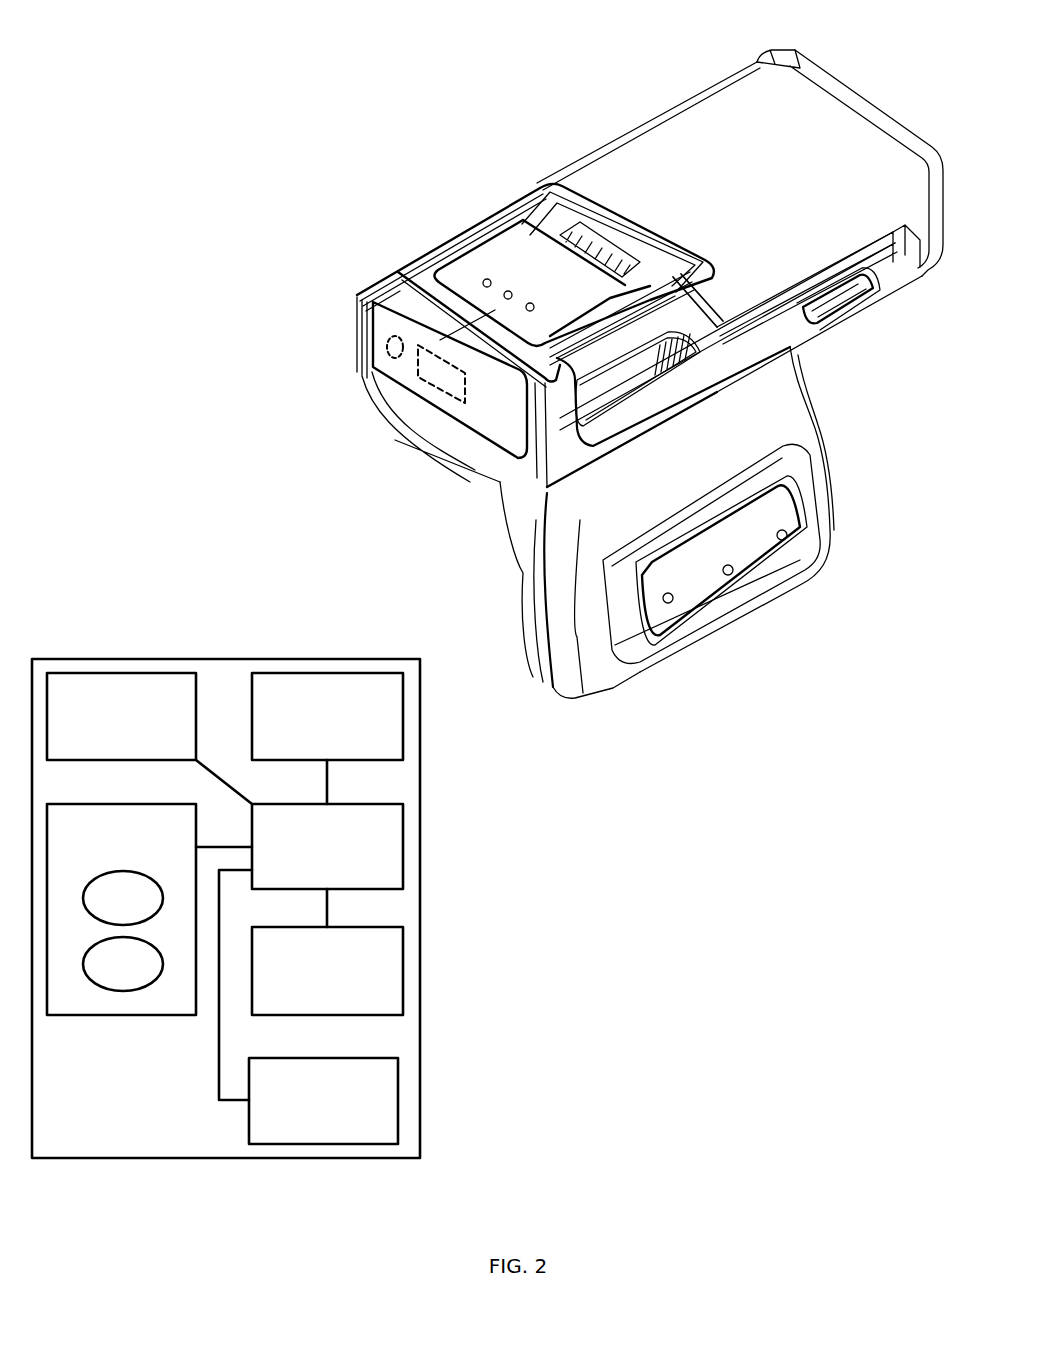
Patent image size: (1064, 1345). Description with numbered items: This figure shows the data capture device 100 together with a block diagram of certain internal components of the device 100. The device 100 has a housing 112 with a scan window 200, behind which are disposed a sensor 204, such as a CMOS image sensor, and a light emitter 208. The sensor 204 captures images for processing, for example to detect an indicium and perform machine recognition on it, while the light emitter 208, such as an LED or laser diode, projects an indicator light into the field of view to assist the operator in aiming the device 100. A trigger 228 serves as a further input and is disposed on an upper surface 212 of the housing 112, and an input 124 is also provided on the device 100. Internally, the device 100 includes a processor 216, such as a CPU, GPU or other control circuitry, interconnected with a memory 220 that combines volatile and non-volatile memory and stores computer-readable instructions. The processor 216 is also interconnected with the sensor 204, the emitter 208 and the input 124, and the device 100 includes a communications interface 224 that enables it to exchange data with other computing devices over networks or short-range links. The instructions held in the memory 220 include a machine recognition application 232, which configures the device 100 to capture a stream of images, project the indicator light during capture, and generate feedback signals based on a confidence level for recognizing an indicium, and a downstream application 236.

The device 100 is at (590, 140).
The housing 112 is at (807, 127).
The input 124 is at (703, 592).
The scan window 200 is at (503, 413).
The sensor 204 is at (458, 403).
The light emitter 208 is at (387, 338).
The upper surface 212 is at (707, 127).
The processor 216 is at (327, 846).
The memory 220 is at (121, 909).
The communications interface 224 is at (327, 971).
The trigger 228 is at (493, 258).
The machine recognition application 232 is at (123, 898).
The downstream application 236 is at (123, 964).